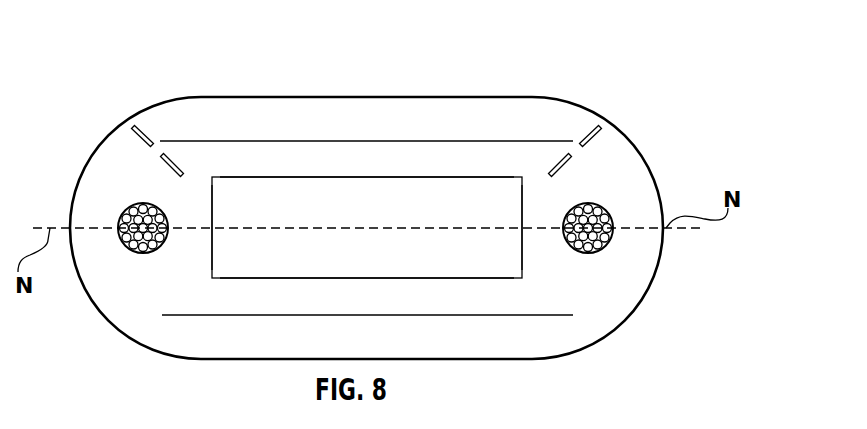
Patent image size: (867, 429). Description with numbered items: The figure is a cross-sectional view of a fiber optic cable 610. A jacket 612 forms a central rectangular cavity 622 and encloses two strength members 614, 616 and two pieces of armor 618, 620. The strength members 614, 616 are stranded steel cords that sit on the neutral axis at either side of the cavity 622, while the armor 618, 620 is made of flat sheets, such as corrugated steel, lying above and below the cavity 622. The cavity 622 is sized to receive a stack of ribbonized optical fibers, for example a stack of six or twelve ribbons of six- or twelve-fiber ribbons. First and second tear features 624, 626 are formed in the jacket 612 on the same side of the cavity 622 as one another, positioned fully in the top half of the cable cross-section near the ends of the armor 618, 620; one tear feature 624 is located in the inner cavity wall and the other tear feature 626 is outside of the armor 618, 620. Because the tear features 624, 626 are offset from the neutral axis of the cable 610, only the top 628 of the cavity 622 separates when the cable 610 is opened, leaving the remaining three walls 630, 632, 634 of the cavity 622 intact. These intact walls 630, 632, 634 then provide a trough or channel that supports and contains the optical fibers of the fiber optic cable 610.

The fiber optic cable 610 is at (688, 86).
The jacket 612 is at (610, 295).
The strength member 614 is at (613, 233).
The strength member 616 is at (120, 233).
The armor 618 is at (487, 141).
The armor 620 is at (520, 315).
The cavity 622 is at (256, 278).
The first tear feature 624 is at (177, 170).
The second tear feature 626 is at (138, 143).
The top of the cavity 628 is at (377, 177).
The wall of the cavity 630 is at (522, 252).
The wall of the cavity 632 is at (372, 278).
The wall of the cavity 634 is at (212, 200).